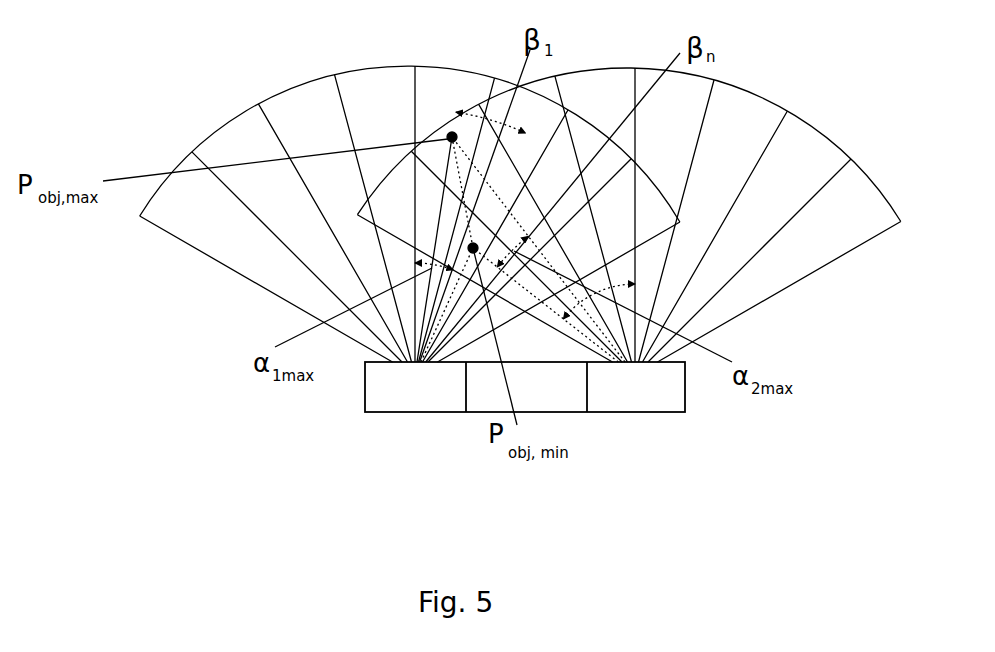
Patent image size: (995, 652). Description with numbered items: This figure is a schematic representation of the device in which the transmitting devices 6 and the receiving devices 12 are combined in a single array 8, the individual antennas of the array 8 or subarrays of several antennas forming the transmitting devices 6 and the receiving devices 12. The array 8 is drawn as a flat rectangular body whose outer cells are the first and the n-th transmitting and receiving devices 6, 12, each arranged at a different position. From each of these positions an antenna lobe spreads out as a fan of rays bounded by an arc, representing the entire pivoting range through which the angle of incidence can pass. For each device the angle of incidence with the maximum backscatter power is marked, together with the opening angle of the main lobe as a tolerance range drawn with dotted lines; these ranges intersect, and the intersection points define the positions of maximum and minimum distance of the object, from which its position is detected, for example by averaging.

The transmitting device 6 is at (707, 432).
The receiving device 12 is at (520, 278).
The array 8 is at (445, 428).